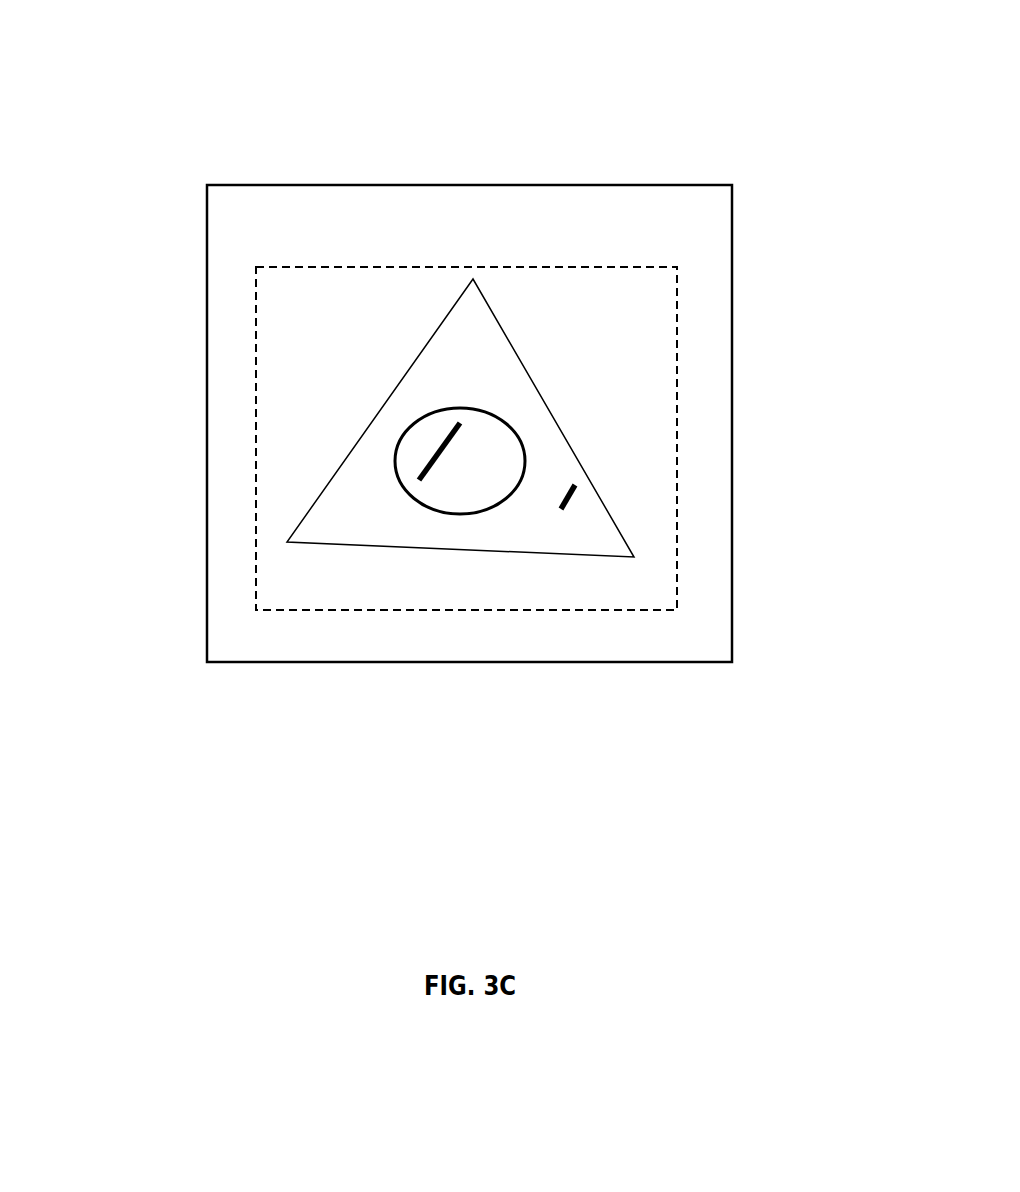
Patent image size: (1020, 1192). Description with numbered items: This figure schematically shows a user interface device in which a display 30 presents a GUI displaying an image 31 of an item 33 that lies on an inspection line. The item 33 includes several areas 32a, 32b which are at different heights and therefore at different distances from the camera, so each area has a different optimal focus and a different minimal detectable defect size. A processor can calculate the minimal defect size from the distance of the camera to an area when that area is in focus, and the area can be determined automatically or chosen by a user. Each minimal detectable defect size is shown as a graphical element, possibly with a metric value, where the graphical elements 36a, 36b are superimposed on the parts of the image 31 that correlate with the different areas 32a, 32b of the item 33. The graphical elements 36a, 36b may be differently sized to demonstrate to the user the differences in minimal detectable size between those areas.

The display 30 is at (168, 316).
The image 31 is at (250, 423).
The area 32a is at (480, 487).
The area 32b is at (473, 349).
The item 33 is at (369, 342).
The graphical element 36a is at (443, 452).
The graphical element 36b is at (575, 502).